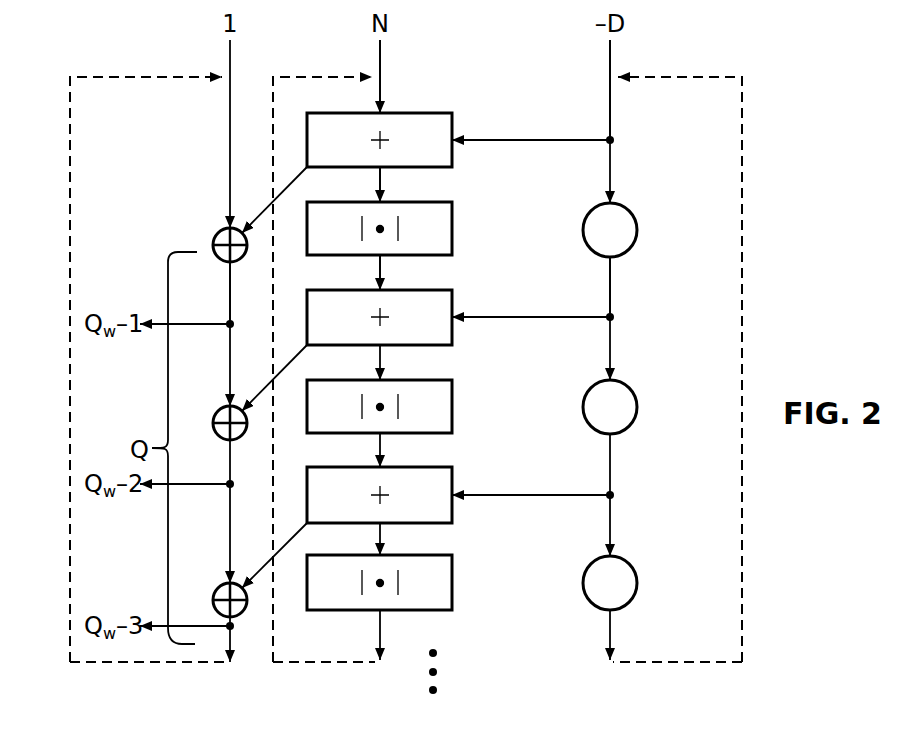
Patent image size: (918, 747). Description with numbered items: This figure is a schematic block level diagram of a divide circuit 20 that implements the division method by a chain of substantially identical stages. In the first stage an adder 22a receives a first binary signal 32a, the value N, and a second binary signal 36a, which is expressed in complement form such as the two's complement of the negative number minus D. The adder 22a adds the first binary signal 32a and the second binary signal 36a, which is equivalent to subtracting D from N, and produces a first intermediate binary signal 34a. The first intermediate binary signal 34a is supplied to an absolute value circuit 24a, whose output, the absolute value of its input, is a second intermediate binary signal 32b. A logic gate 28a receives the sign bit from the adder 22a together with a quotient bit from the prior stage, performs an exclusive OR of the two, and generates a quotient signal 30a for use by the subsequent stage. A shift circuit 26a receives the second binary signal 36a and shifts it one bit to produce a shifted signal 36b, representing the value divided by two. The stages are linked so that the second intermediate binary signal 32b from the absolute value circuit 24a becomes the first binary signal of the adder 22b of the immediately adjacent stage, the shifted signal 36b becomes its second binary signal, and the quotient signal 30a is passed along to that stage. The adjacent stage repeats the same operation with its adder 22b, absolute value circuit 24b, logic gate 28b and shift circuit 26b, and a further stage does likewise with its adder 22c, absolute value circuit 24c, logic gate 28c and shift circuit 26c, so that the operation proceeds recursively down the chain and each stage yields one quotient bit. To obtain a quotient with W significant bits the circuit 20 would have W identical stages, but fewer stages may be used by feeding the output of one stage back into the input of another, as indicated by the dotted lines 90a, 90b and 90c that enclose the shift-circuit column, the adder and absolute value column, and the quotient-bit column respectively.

The divide circuit 20 is at (146, 274).
The adder 22a is at (455, 122).
The adder 22b is at (455, 330).
The adder 22c is at (455, 480).
The absolute value circuit 24a is at (455, 229).
The absolute value circuit 24b is at (455, 402).
The absolute value circuit 24c is at (455, 580).
The shift circuit 26a is at (630, 212).
The shift circuit 26b is at (630, 390).
The shift circuit 26c is at (630, 567).
The logic gate 28a is at (218, 233).
The logic gate 28b is at (218, 411).
The logic gate 28c is at (218, 588).
The quotient signal 30a is at (230, 305).
The first binary signal 32a is at (382, 60).
The second intermediate binary signal 32b is at (382, 262).
The first intermediate binary signal 34a is at (380, 173).
The second binary signal 36a is at (612, 62).
The shifted signal 36b is at (612, 292).
The dotted line 90a is at (744, 538).
The dotted line 90b is at (292, 663).
The dotted line 90c is at (70, 552).